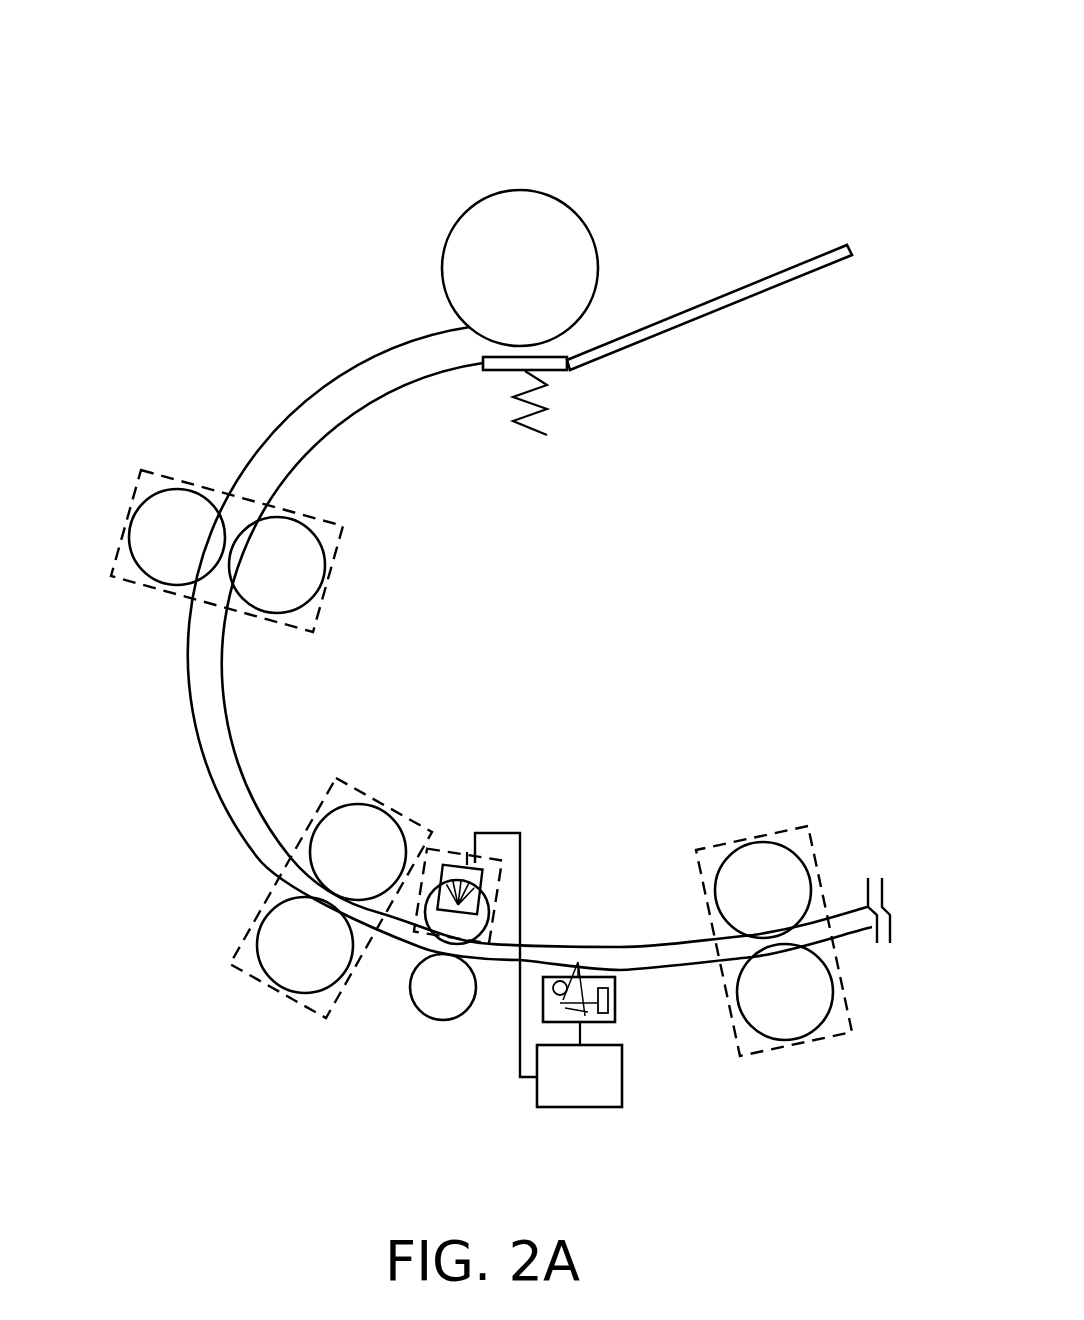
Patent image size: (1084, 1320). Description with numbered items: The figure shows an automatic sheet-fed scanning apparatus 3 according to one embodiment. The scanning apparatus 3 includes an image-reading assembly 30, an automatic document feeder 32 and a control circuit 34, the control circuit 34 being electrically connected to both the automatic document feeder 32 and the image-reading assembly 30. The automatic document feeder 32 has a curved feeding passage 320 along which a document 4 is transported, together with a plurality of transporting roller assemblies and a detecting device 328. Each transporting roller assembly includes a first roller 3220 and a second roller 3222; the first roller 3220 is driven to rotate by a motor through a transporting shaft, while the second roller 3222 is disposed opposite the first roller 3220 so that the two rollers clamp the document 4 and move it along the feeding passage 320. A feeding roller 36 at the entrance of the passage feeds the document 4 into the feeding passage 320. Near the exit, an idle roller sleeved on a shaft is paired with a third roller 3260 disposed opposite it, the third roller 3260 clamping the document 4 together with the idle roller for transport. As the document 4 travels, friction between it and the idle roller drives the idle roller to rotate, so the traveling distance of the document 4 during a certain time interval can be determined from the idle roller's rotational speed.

The scanning apparatus 3 is at (321, 118).
The feeding roller 36 is at (573, 208).
The automatic document feeder 32 is at (574, 625).
The feeding passage 320 is at (220, 697).
The document 4 is at (233, 796).
The first roller 3220 is at (327, 800).
The second roller 3222 is at (258, 927).
The detecting device 328 is at (467, 852).
The third roller 3260 is at (440, 1022).
The image-reading assembly 30 is at (615, 993).
The control circuit 34 is at (622, 1070).